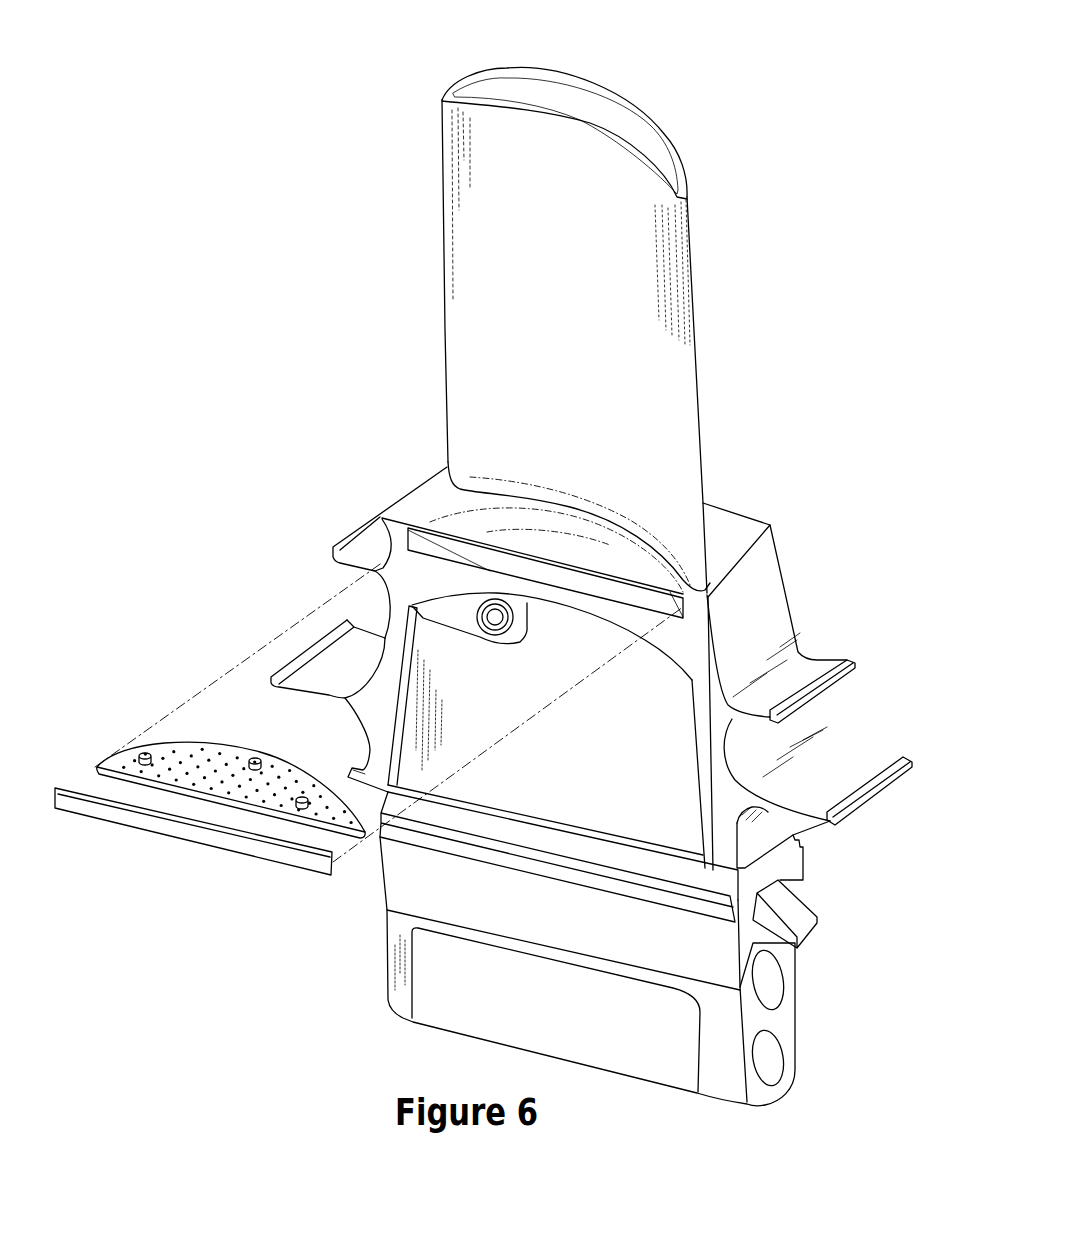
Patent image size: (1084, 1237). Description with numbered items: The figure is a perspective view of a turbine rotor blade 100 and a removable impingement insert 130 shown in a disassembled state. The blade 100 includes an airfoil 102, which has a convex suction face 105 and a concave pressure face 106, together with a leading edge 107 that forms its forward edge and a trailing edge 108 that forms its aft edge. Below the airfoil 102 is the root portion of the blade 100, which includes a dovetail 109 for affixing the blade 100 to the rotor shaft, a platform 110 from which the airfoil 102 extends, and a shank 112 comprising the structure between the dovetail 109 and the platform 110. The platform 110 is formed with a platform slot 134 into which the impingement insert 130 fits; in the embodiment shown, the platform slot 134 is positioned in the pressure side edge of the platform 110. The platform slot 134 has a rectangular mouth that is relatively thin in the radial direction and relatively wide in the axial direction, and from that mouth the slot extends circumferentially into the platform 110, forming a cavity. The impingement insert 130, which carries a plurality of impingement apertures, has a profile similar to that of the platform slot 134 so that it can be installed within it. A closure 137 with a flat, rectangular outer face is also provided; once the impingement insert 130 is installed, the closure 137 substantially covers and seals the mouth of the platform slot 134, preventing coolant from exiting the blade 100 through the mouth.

The turbine rotor blade 100 is at (693, 97).
The airfoil 102 is at (585, 318).
The convex suction face 105 is at (701, 214).
The concave pressure face 106 is at (490, 237).
The leading edge 107 is at (440, 130).
The trailing edge 108 is at (687, 312).
The dovetail 109 is at (797, 975).
The platform 110 is at (410, 493).
The shank 112 is at (890, 785).
The impingement insert 130 is at (212, 760).
The platform slot 134 is at (632, 592).
The closure 137 is at (203, 833).